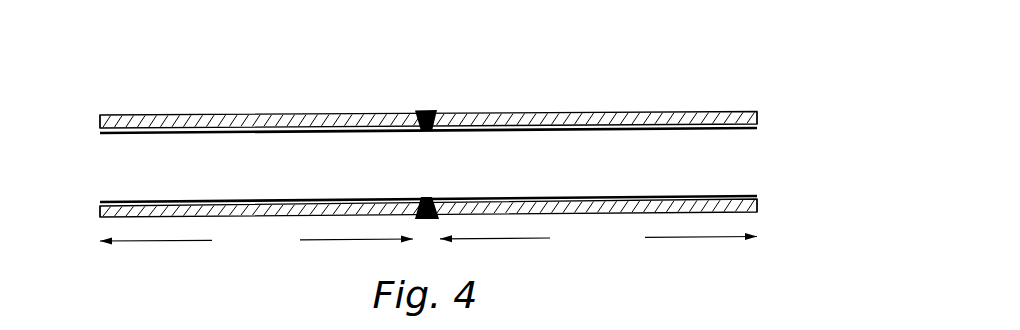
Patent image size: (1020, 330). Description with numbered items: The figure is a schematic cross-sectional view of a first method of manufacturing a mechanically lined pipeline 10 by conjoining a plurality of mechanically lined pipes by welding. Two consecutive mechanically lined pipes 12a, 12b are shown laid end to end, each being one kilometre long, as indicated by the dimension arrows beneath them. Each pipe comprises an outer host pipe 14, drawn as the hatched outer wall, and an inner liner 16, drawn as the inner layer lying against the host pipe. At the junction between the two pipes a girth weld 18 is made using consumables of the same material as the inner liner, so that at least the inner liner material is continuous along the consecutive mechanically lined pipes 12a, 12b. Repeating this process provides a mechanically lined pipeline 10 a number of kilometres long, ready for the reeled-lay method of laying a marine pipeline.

The mechanically lined pipeline 10 is at (110, 70).
The first mechanically lined pipe 12a is at (100, 110).
The second mechanically lined pipe 12b is at (613, 102).
The outer host pipe 14 is at (740, 109).
The inner liner 16 is at (630, 128).
The girth weld 18 is at (424, 109).